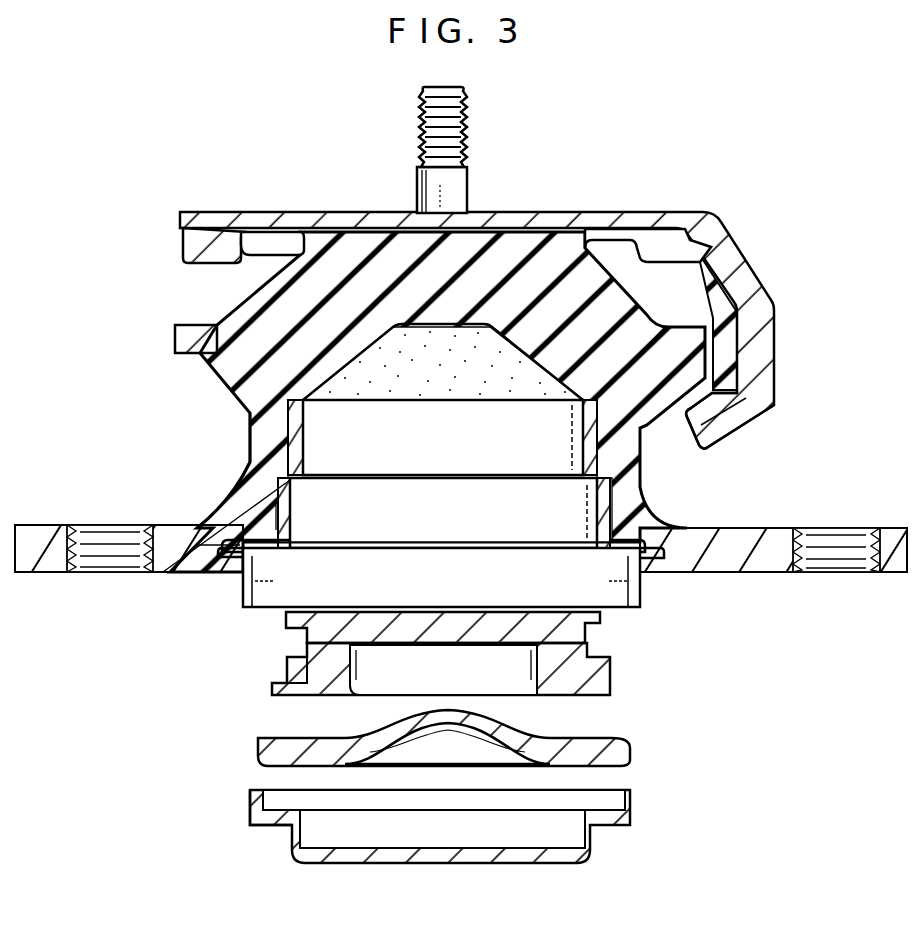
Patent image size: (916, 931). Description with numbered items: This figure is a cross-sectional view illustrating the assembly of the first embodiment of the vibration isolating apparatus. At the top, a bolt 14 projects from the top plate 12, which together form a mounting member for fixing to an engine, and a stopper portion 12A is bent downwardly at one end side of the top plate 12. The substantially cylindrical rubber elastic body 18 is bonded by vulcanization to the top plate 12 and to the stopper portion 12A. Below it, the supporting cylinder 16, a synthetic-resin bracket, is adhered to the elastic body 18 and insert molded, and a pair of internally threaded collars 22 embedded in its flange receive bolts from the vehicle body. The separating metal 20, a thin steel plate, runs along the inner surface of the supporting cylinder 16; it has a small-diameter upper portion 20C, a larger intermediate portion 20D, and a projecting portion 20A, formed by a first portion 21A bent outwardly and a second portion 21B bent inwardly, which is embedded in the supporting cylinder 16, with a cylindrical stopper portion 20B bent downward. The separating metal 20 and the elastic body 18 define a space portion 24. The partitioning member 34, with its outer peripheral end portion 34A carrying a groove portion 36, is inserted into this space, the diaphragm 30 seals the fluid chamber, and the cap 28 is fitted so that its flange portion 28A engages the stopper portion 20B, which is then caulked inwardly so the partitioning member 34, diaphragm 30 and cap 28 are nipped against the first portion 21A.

The top plate 12 is at (258, 212).
The stopper portion 12A is at (747, 422).
The bolt 14 is at (421, 135).
The supporting cylinder 16 is at (224, 393).
The elastic body 18 is at (250, 283).
The separating metal 20 is at (278, 494).
The projecting portion 20A is at (197, 567).
The stopper portion 20B is at (240, 598).
The upper portion 20C is at (288, 420).
The intermediate portion 20D is at (278, 517).
The first portion 21A is at (262, 546).
The second portion 21B is at (225, 550).
The collars 22 is at (66, 573).
The space portion 24 is at (447, 524).
The cap 28 is at (291, 847).
The flange portion 28A is at (272, 830).
The diaphragm 30 is at (258, 750).
The partitioning member 34 is at (271, 688).
The outer peripheral end portion 34A is at (290, 678).
The groove portion 36 is at (296, 622).